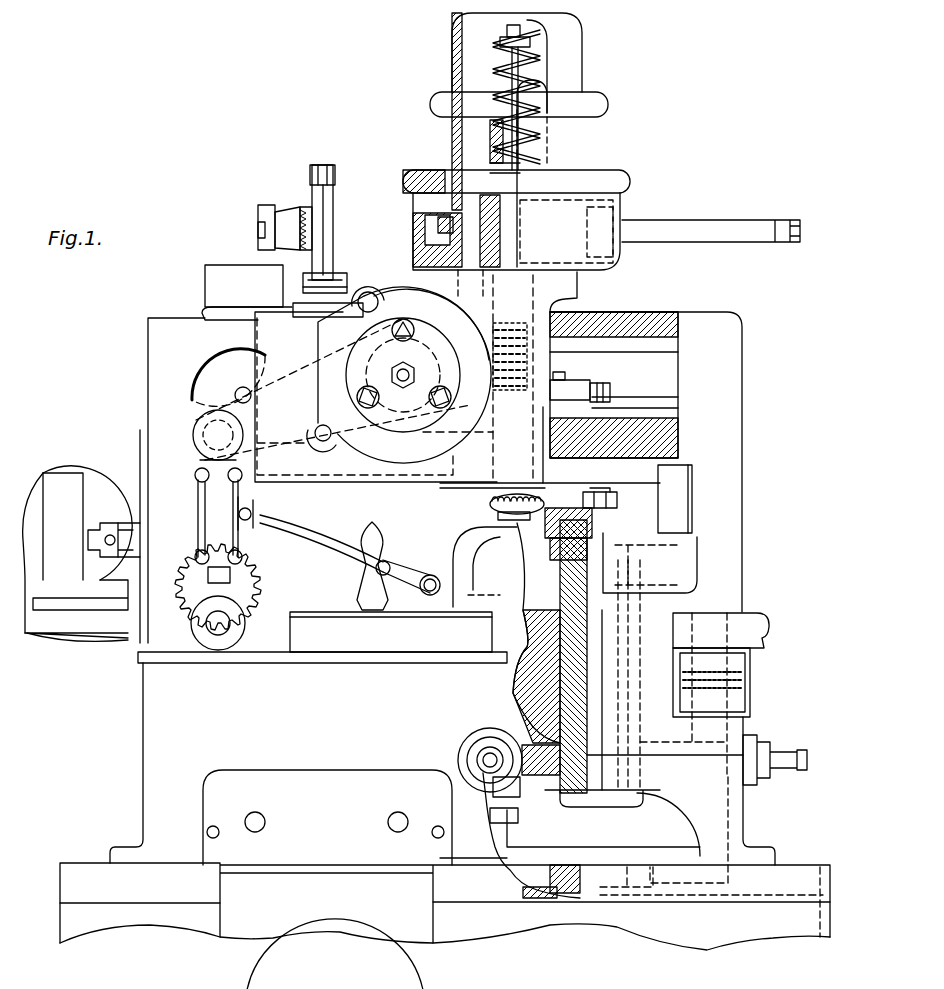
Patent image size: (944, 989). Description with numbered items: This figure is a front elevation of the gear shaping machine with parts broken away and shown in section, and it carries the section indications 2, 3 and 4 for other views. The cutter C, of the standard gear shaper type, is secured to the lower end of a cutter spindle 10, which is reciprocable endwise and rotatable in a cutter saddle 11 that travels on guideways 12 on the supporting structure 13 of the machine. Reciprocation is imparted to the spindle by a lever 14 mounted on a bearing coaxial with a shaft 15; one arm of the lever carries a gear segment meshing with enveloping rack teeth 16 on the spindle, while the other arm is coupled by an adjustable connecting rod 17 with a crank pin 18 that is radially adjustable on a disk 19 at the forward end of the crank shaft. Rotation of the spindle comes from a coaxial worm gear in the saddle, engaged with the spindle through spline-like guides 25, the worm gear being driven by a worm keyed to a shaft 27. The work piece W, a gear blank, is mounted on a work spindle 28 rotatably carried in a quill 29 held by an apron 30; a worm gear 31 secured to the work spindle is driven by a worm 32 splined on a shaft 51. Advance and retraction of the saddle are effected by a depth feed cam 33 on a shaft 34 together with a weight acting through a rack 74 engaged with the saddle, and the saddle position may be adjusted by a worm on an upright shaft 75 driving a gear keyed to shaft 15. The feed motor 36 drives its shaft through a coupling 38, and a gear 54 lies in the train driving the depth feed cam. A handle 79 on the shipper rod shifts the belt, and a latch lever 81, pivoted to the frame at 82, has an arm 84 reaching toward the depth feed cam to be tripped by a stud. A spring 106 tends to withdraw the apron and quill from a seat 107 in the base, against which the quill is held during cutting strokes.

The section line 2- 2 is at (607, 280).
The section line 3- 3 is at (280, 588).
The section line 4- 4 is at (283, 580).
The cutter spindle 10 is at (500, 760).
The cutter saddle 11 is at (266, 335).
The guideways 12 is at (657, 313).
The supporting structure 13 is at (245, 400).
The lever 14 is at (470, 326).
The shaft 15 is at (398, 371).
The rack teeth 16 is at (505, 358).
The connecting rod 17 is at (199, 527).
The crank pin 18 is at (210, 629).
The disk 19 is at (254, 614).
The guides 25 is at (503, 178).
The shaft 27 is at (720, 227).
The work spindle 28 is at (560, 678).
The quill 29 is at (560, 690).
The apron 30 is at (665, 612).
The worm gear 31 is at (542, 783).
The worm 32 is at (492, 785).
The depth feed cam 33 is at (215, 372).
The shaft 34 is at (236, 397).
The electric motor 36 is at (67, 473).
The coupling 38 is at (92, 545).
The shaft 51 is at (485, 757).
The gear 54 is at (763, 638).
The rack 74 is at (584, 384).
The upright shaft 75 is at (333, 180).
The handle 79 is at (382, 543).
The latch lever 81 is at (338, 537).
The pivot 82 is at (243, 512).
The arm 84 is at (205, 446).
The spring 106 is at (748, 686).
The seat 107 is at (523, 627).
The cutter C is at (495, 500).
The work piece W is at (654, 520).